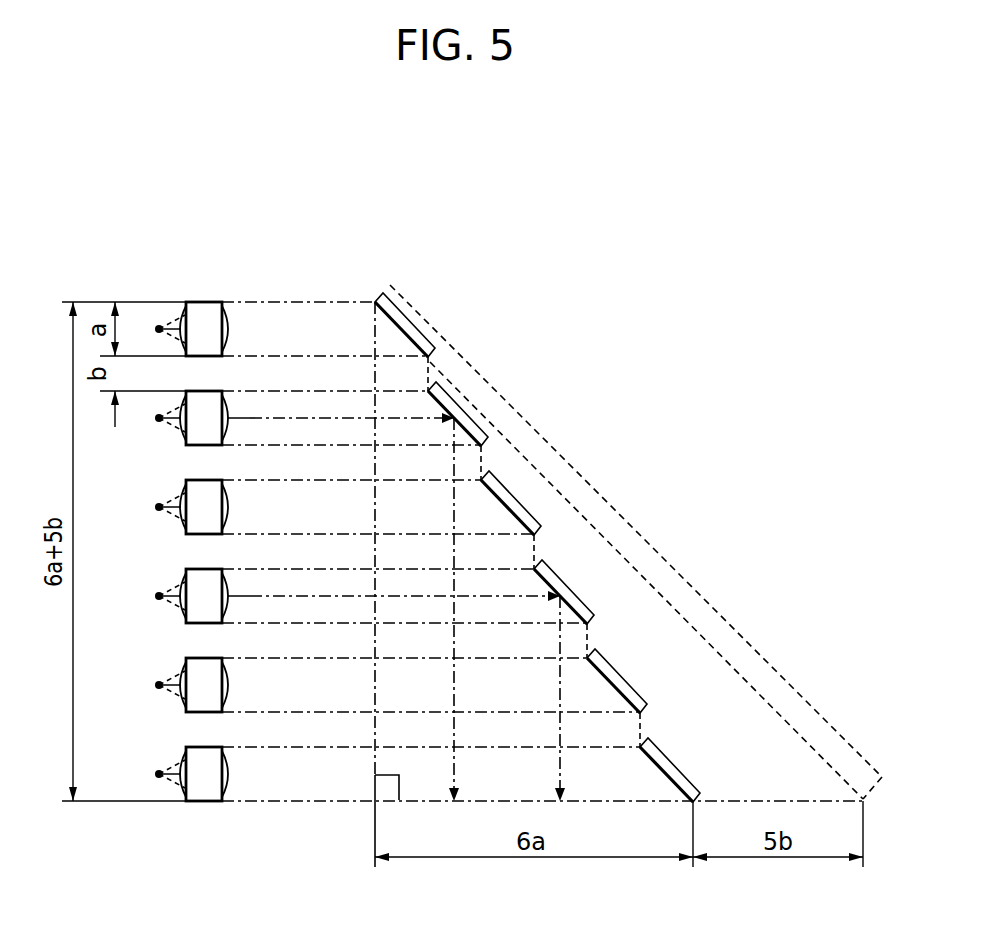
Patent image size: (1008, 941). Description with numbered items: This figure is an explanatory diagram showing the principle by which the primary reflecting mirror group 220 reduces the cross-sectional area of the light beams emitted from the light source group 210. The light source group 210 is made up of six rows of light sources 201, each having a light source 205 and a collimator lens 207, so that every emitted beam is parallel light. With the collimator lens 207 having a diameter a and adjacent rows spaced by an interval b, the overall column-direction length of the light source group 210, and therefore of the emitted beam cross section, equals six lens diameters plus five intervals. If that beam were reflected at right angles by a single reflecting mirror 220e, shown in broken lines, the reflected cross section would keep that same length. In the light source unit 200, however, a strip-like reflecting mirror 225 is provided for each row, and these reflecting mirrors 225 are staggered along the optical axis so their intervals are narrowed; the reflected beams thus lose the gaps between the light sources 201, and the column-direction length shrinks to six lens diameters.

The optical device / light source unit 200 is at (654, 291).
The light source 201 is at (203, 210).
The light source 205 is at (158, 320).
The collimator lens 207 is at (205, 318).
The light source group 210 is at (131, 828).
The primary reflecting mirror group 220 is at (460, 300).
The single reflecting mirror 220e is at (640, 533).
The strip-like reflecting mirror 225 is at (462, 404).